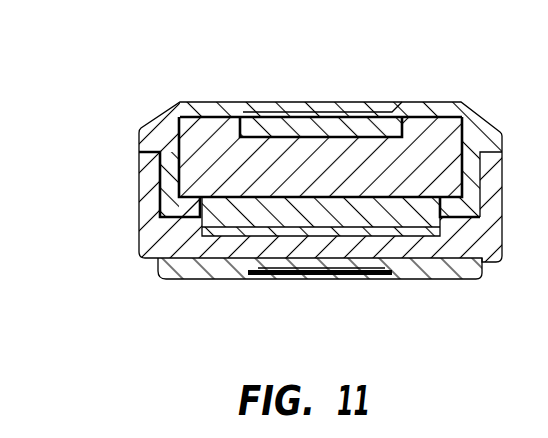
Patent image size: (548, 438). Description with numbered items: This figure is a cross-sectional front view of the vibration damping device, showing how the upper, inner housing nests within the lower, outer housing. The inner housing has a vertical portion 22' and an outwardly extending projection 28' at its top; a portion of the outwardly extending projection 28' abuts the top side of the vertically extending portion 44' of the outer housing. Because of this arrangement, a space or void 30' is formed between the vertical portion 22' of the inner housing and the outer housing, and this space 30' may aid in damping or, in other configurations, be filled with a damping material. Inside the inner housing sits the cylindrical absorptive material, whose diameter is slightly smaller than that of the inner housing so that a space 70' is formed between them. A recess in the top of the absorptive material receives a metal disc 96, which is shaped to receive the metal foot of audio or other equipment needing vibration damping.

The outwardly extending projection 28' is at (273, 182).
The space 70' is at (291, 147).
The vertical portion 22' is at (141, 184).
The vertically extending portion 44' is at (269, 214).
The space or void 30' is at (267, 245).
The metal disc 96 is at (358, 130).